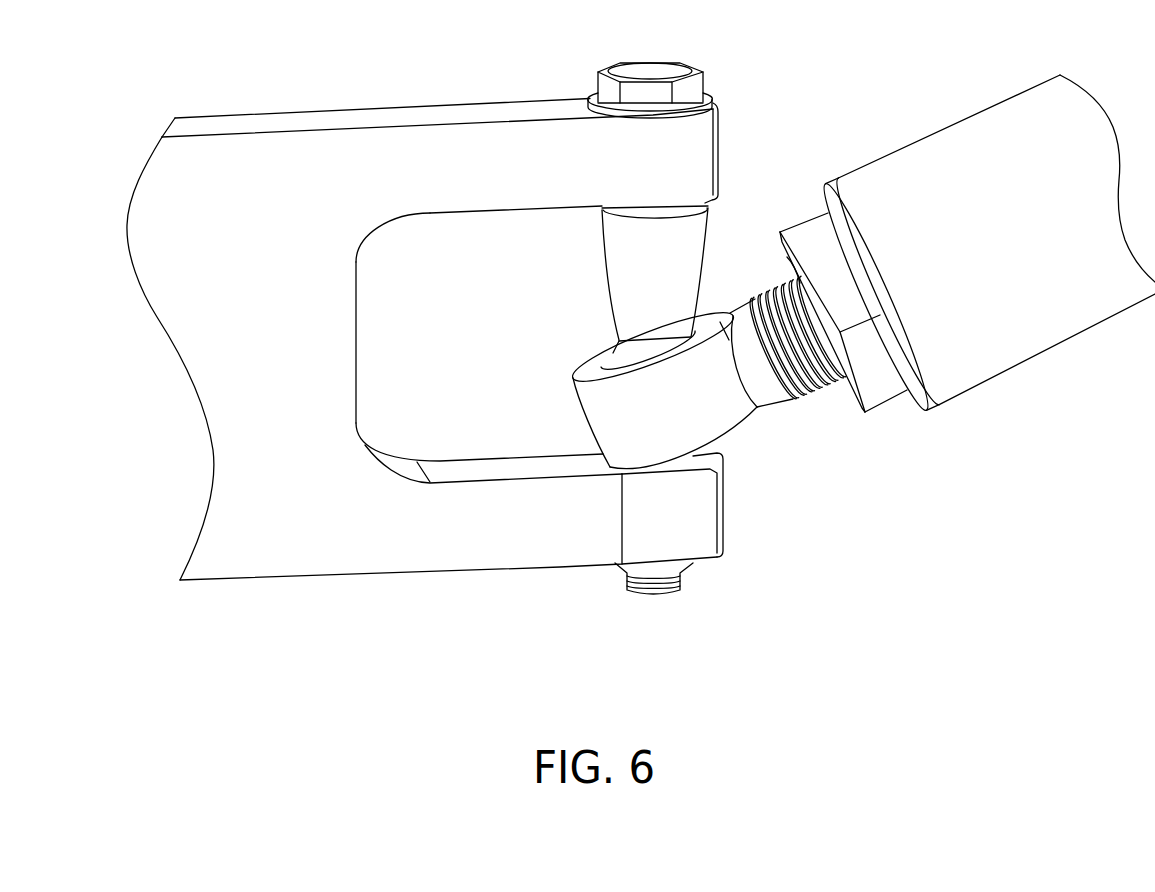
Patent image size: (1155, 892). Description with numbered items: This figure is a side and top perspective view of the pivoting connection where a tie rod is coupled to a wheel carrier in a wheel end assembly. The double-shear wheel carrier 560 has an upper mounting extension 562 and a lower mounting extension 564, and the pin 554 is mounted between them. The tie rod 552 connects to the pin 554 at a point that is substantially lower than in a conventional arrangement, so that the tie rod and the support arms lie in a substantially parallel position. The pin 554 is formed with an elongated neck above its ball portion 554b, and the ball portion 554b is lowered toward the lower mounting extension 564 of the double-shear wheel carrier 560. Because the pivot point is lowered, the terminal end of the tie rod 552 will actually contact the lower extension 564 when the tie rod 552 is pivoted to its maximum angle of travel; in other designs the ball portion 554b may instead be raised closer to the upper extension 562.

The tie rod 552 is at (978, 127).
The pin 554 is at (680, 262).
The ball portion 554b is at (612, 360).
The double-shear wheel carrier 560 is at (265, 316).
The upper mounting extension 562 is at (514, 186).
The lower mounting extension 564 is at (585, 543).